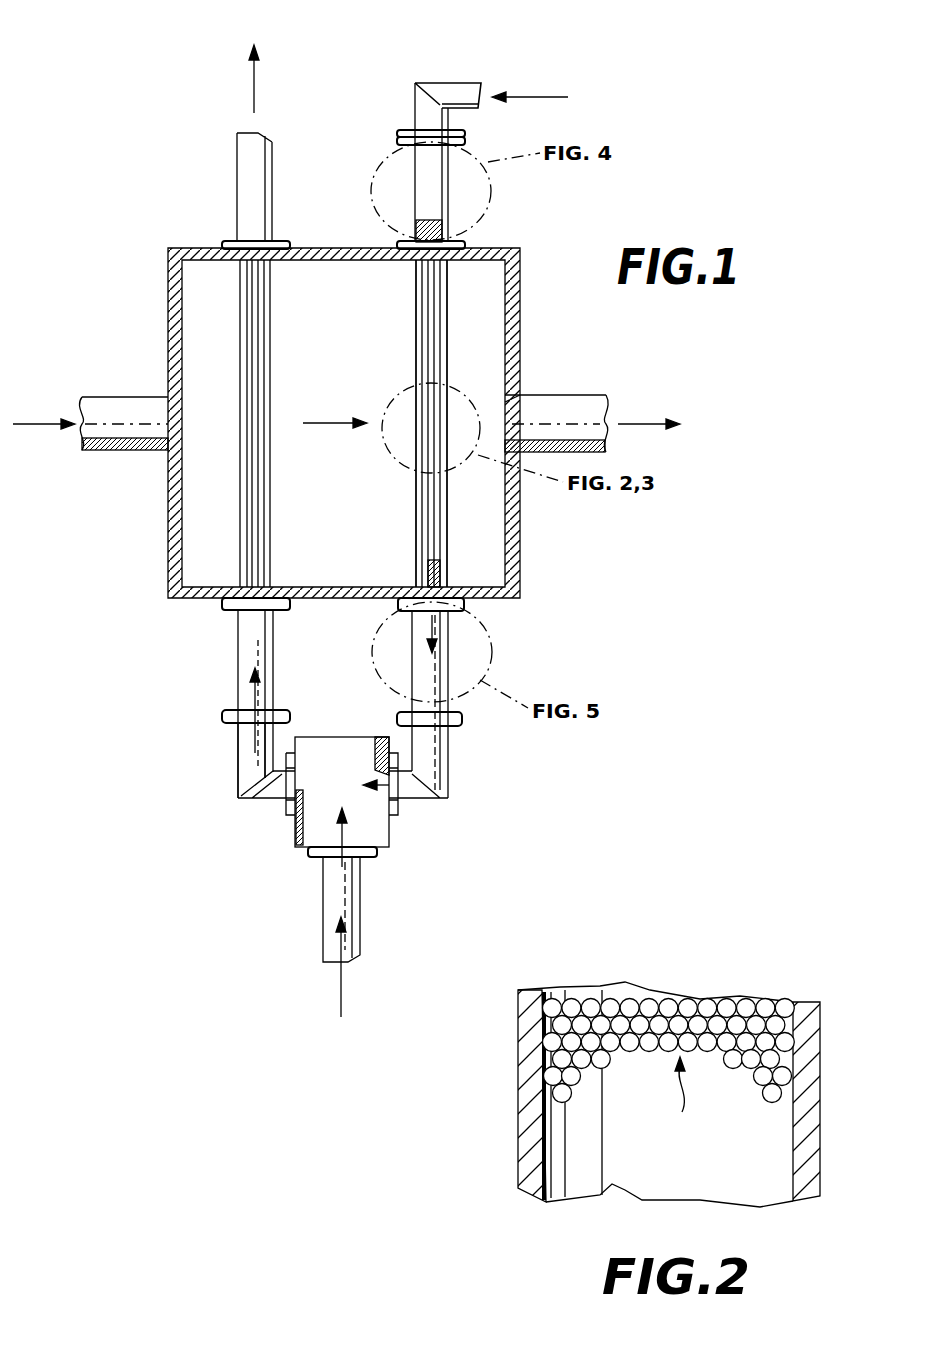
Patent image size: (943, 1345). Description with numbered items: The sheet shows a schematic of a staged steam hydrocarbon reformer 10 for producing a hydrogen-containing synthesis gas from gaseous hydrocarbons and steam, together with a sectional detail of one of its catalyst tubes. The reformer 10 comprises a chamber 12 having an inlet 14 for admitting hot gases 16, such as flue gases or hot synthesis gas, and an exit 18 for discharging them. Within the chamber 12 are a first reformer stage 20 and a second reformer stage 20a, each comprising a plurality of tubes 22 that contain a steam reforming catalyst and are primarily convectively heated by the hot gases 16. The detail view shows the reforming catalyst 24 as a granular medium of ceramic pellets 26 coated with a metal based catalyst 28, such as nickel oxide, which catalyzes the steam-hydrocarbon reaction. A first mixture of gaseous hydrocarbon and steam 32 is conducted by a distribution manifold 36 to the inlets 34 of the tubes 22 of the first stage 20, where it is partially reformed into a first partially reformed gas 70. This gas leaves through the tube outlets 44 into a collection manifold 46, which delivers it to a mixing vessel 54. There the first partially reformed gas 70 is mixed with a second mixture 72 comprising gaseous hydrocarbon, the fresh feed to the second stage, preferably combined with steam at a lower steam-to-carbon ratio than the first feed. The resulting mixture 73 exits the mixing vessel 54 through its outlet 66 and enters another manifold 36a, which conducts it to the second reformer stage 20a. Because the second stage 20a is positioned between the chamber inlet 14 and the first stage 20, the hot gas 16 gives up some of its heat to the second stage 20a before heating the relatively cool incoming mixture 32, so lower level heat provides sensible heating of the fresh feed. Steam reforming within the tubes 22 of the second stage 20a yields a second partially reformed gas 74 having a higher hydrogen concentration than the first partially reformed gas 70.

In FIG. 1, the steam hydrocarbon reformer 10 is at (652, 190).
In FIG. 1, the chamber 12 is at (168, 538).
In FIG. 1, the inlet 14 is at (158, 440).
In FIG. 1, the hot gases 16 is at (45, 424).
In FIG. 1, the exit 18 is at (512, 415).
In FIG. 1, the reformer stage 20 is at (445, 300).
In FIG. 1, the second reformer stage 20a is at (275, 535).
In FIG. 1, the tubes 22 is at (432, 277).
In FIG. 2, the tubes 22 is at (812, 1030).
In FIG. 2, the reforming catalyst 24 is at (669, 1074).
In FIG. 2, the ceramic pellets 26 is at (585, 1090).
In FIG. 2, the metal based catalyst 28 is at (540, 1090).
In FIG. 1, the mixture of gaseous hydrocarbon and steam 32 is at (540, 97).
In FIG. 1, the inlets 34 is at (427, 223).
In FIG. 1, the distribution manifold 36 is at (417, 173).
In FIG. 1, the collection manifold 36a is at (245, 660).
In FIG. 1, the outlets 44 is at (448, 590).
In FIG. 1, the collection manifold 46 is at (445, 677).
In FIG. 1, the mixing vessel 54 is at (378, 827).
In FIG. 1, the outlet 66 is at (270, 800).
In FIG. 1, the first partially reformed gas 70 is at (430, 640).
In FIG. 1, the second mixture 72 is at (322, 838).
In FIG. 1, the mixture 73 is at (250, 748).
In FIG. 1, the second partially reformed gas 74 is at (254, 80).